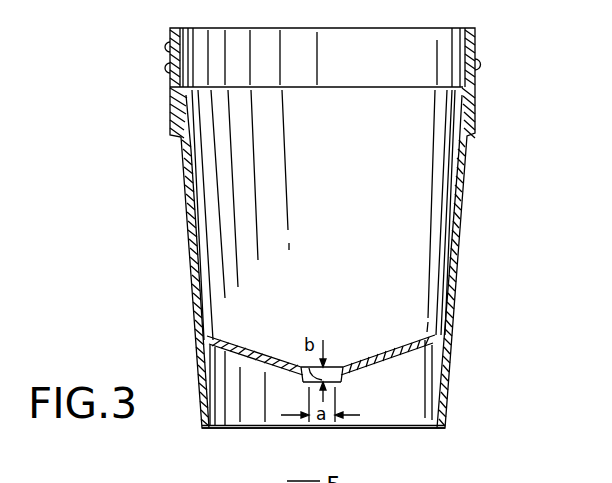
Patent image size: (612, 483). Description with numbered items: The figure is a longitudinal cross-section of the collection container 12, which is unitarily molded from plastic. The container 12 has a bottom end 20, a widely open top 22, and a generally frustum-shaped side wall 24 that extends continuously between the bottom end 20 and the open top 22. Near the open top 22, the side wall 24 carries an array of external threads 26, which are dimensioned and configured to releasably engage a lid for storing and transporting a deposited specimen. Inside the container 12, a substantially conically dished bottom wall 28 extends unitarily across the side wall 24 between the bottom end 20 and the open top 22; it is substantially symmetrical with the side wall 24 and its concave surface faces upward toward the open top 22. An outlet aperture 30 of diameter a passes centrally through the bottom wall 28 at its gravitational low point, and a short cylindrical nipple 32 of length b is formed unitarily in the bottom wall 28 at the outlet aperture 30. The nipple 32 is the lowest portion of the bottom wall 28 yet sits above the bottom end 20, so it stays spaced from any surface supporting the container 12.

The container 12 is at (467, 313).
The bottom end 20 is at (202, 428).
The open top 22 is at (438, 28).
The side wall 24 is at (463, 190).
The external threads 26 is at (481, 67).
The bottom wall 28 is at (241, 346).
The outlet aperture 30 is at (330, 364).
The nipple 32 is at (343, 380).